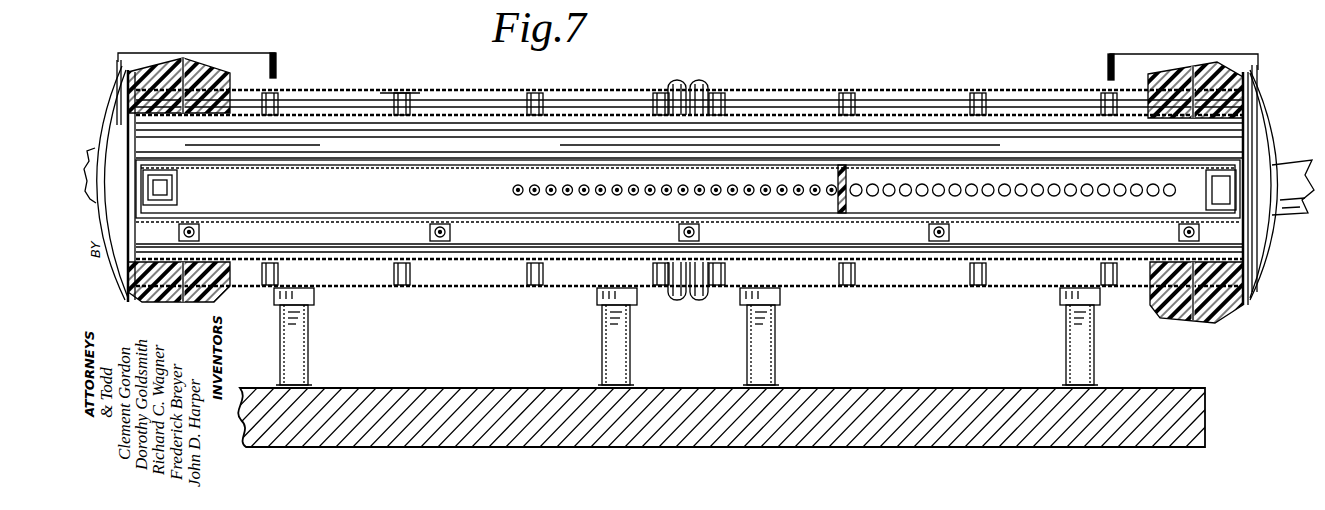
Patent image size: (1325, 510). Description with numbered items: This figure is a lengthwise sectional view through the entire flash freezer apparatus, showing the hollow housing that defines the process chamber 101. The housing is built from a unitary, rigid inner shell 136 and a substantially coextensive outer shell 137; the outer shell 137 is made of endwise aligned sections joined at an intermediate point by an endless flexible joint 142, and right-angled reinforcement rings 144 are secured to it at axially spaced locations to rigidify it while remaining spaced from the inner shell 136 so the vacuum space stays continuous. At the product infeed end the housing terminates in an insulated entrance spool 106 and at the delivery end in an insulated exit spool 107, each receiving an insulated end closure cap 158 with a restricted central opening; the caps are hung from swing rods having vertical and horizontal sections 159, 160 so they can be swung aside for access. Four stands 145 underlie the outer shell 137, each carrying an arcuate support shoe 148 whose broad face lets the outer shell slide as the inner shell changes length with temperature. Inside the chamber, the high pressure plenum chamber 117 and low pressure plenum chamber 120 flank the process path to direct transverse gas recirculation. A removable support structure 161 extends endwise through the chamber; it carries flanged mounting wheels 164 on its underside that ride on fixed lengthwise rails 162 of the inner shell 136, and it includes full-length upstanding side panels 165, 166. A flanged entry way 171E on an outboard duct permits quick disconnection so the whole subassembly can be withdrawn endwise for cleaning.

The process chamber 101 is at (406, 147).
The insulated entrance spool 106 is at (1232, 326).
The insulated exit spool 107 is at (207, 66).
The high pressure plenum chamber 117 is at (1075, 205).
The low pressure plenum chamber 120 is at (768, 203).
The inner shell 136 is at (886, 119).
The outer shell 137 is at (813, 92).
The flexible joint 142 is at (684, 80).
The reinforcement rings 144 is at (396, 95).
The stands 145 is at (316, 356).
The arcuate support shoe 148 is at (300, 289).
The end closure cap 158 is at (115, 123).
The vertical section of swing rod 159 is at (278, 60).
The horizontal section of swing rod 160 is at (160, 51).
The removable support structure 161 is at (428, 153).
The lengthwise rails 162 is at (308, 244).
The flanged mounting wheels 164 is at (190, 241).
The upstanding side panel 165 is at (557, 200).
The upstanding side panel 166 is at (456, 204).
The flanged entry way 171E is at (170, 190).